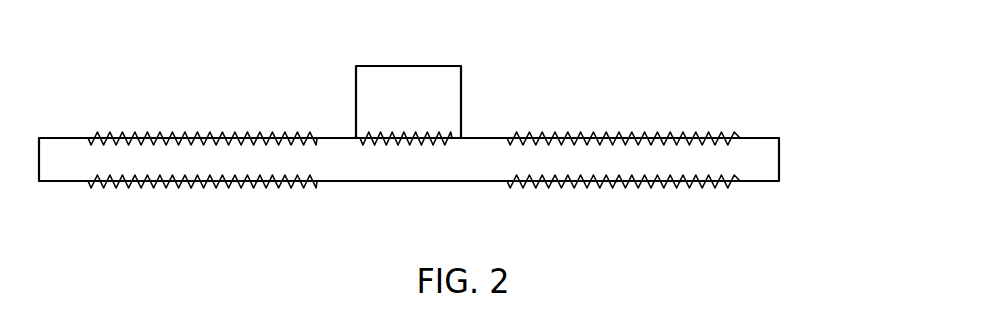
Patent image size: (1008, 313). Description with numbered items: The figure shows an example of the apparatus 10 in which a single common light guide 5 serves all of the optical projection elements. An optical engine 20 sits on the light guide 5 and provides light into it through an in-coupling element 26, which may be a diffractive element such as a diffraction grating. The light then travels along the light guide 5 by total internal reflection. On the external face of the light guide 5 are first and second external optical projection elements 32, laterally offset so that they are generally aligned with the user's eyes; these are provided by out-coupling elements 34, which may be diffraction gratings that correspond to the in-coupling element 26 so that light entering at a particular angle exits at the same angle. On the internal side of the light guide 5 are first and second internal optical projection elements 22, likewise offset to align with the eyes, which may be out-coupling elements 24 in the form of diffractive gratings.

The light guide 5 is at (780, 157).
The apparatus 10 is at (843, 74).
The optical engine 20 is at (404, 66).
The internal optical projection element 22 is at (433, 215).
The out-coupling element 24 is at (255, 186).
The in-coupling element 26 is at (403, 141).
The external optical projection element 32 is at (428, 100).
The out-coupling element 34 is at (200, 134).